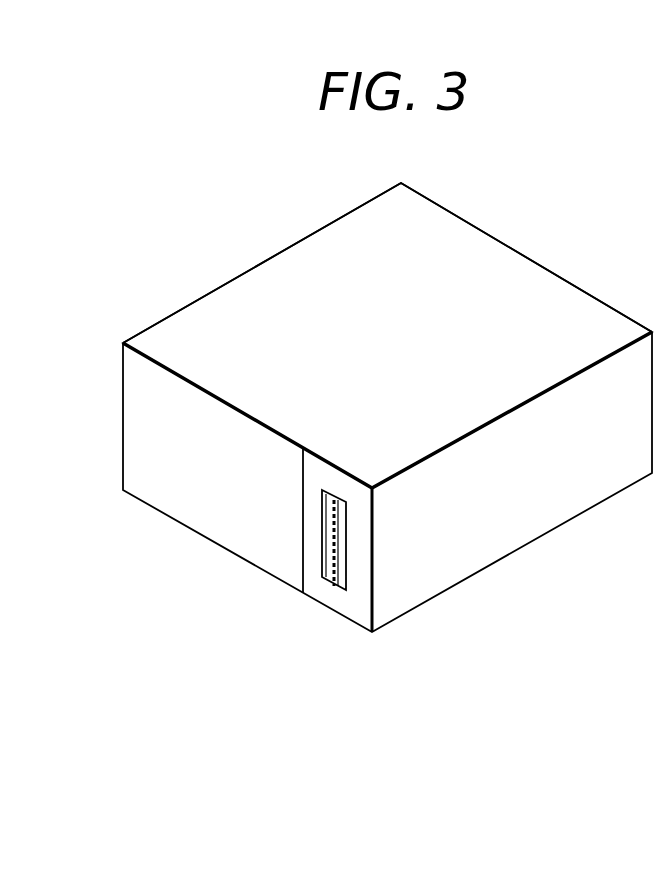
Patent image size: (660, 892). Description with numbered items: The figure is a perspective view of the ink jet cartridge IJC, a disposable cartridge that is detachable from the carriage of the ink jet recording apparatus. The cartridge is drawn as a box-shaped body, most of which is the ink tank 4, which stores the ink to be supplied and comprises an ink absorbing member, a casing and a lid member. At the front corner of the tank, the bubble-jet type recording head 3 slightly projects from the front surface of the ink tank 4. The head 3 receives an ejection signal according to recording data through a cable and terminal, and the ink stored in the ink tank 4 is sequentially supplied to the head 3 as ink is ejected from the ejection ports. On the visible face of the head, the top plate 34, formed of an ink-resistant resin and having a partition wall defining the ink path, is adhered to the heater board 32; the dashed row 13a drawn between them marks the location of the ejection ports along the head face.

The ink jet cartridge IJC is at (532, 250).
The ink tank 4 is at (322, 265).
The bubble-jet type recording head 3 is at (350, 608).
The heater board 32 is at (322, 575).
The ejection port array 13a is at (336, 588).
The top plate 34 is at (343, 563).